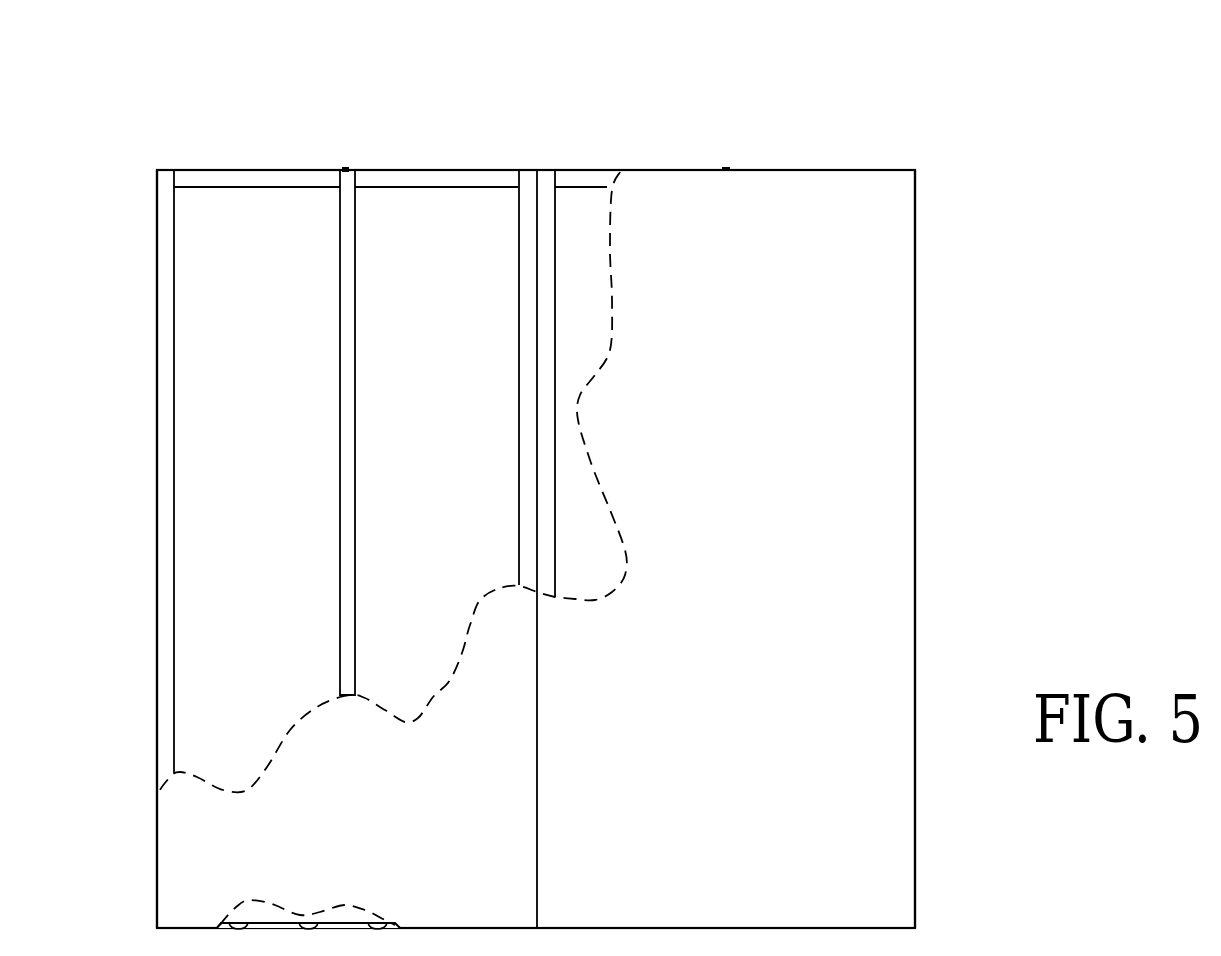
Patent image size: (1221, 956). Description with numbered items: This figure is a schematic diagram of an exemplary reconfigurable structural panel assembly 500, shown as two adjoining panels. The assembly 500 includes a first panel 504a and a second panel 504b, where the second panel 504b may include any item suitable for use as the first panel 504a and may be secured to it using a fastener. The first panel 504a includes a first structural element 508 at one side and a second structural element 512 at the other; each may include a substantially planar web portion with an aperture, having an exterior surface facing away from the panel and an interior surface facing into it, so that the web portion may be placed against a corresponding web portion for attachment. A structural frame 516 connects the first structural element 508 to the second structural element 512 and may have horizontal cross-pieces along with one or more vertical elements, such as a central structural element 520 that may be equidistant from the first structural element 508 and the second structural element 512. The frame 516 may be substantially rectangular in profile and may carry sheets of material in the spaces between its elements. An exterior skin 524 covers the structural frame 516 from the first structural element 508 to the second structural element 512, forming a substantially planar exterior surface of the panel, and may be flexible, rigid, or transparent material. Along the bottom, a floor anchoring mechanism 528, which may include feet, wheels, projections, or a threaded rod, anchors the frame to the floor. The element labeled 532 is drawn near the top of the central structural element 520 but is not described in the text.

The reconfigurable structural panel assembly 500 is at (175, 57).
The first panel 504a is at (425, 170).
The second panel 504b is at (875, 170).
The first structural element 508 is at (157, 213).
The second structural element 512 is at (528, 172).
The structural frame 516 is at (258, 178).
The central structural element 520 is at (348, 405).
The exterior skin 524 is at (195, 850).
The floor anchoring mechanism 528 is at (238, 927).
The fastener / joint 532 is at (347, 170).